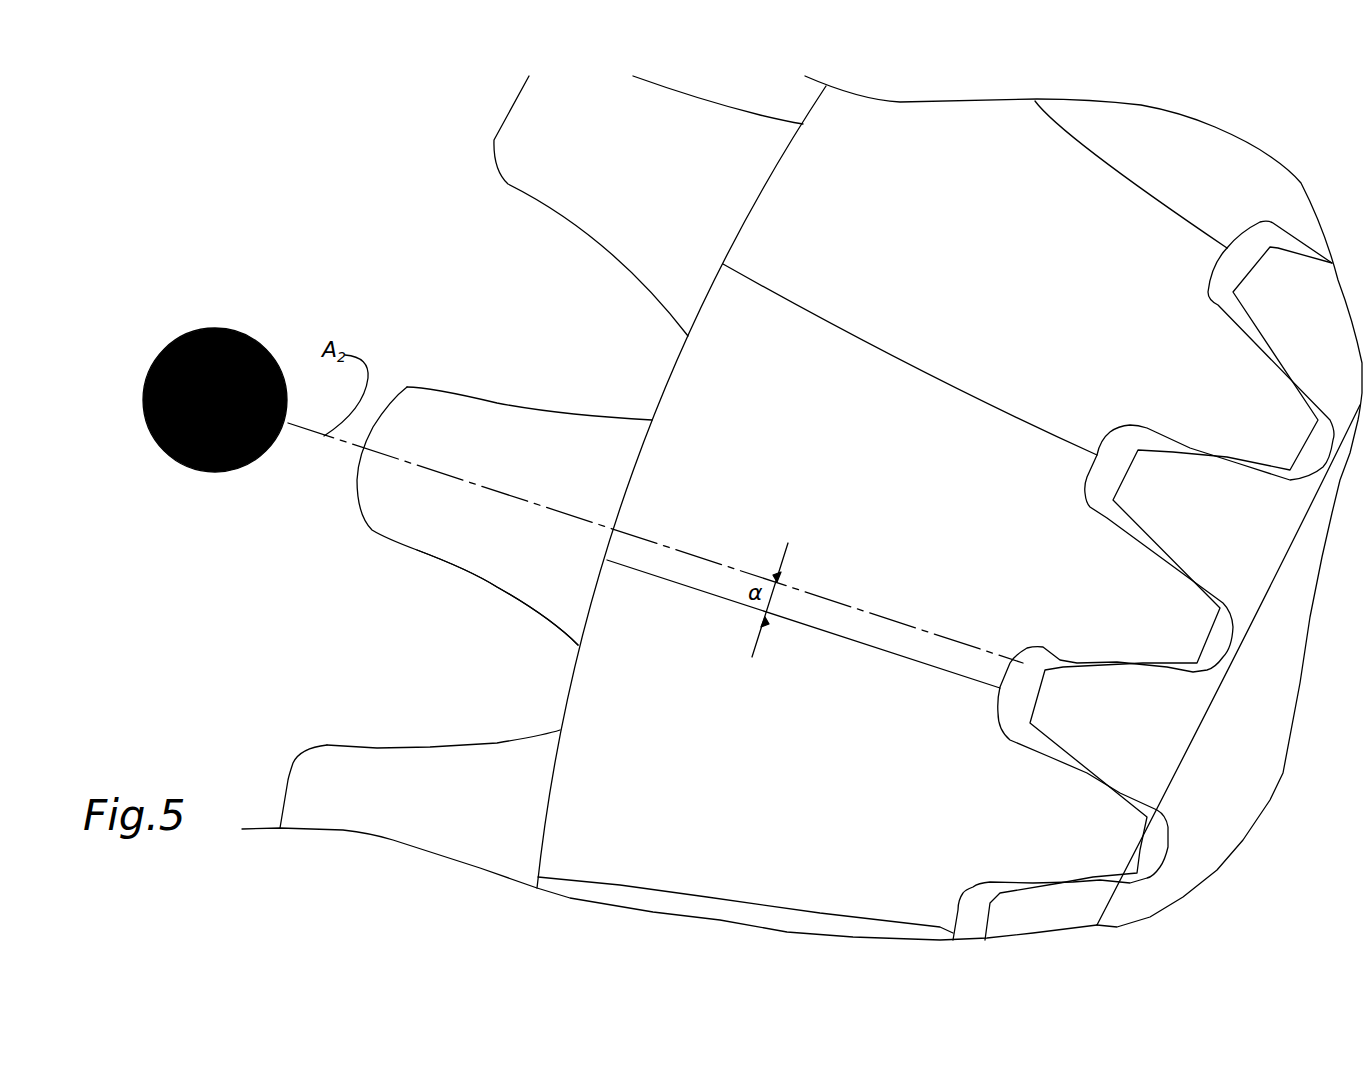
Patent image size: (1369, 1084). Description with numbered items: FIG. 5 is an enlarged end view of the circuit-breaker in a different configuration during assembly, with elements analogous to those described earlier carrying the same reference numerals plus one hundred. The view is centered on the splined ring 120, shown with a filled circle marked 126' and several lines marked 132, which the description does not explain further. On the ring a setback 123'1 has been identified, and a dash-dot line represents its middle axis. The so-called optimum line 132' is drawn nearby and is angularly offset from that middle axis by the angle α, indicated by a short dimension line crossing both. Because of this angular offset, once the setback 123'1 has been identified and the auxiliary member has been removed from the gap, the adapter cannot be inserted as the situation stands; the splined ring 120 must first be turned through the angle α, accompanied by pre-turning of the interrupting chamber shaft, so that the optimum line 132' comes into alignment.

The splined ring 120 is at (407, 243).
The axis of rotation (centre) 126' is at (209, 347).
The setback 123'1 is at (419, 601).
The slot / groove 132 is at (882, 517).
The optimum line 132' is at (803, 650).